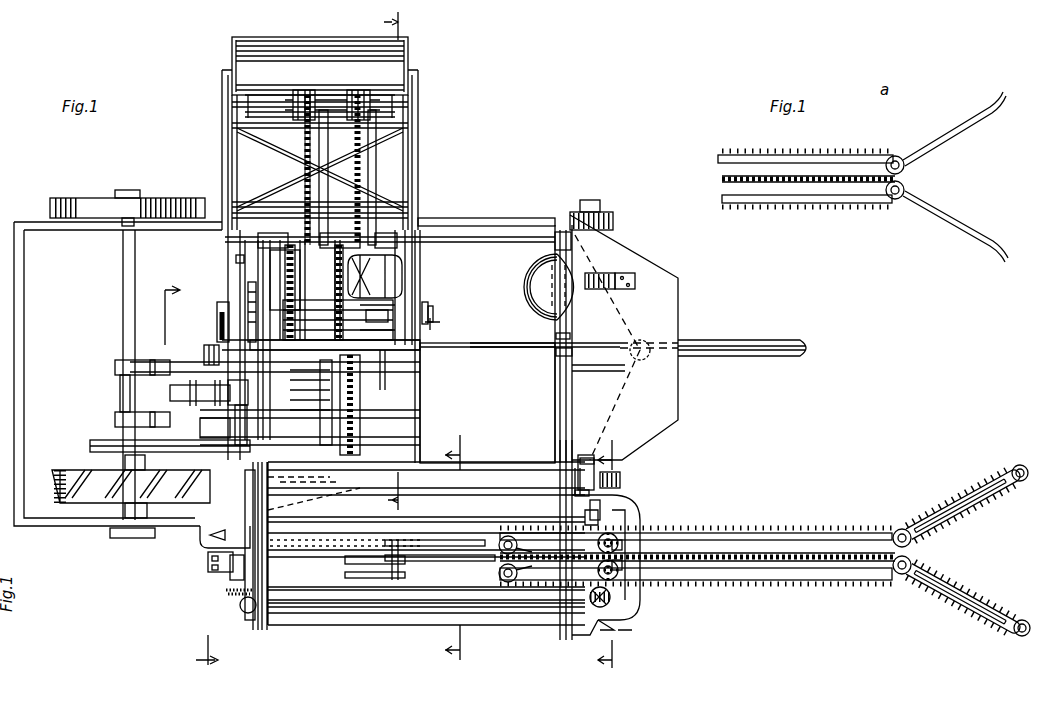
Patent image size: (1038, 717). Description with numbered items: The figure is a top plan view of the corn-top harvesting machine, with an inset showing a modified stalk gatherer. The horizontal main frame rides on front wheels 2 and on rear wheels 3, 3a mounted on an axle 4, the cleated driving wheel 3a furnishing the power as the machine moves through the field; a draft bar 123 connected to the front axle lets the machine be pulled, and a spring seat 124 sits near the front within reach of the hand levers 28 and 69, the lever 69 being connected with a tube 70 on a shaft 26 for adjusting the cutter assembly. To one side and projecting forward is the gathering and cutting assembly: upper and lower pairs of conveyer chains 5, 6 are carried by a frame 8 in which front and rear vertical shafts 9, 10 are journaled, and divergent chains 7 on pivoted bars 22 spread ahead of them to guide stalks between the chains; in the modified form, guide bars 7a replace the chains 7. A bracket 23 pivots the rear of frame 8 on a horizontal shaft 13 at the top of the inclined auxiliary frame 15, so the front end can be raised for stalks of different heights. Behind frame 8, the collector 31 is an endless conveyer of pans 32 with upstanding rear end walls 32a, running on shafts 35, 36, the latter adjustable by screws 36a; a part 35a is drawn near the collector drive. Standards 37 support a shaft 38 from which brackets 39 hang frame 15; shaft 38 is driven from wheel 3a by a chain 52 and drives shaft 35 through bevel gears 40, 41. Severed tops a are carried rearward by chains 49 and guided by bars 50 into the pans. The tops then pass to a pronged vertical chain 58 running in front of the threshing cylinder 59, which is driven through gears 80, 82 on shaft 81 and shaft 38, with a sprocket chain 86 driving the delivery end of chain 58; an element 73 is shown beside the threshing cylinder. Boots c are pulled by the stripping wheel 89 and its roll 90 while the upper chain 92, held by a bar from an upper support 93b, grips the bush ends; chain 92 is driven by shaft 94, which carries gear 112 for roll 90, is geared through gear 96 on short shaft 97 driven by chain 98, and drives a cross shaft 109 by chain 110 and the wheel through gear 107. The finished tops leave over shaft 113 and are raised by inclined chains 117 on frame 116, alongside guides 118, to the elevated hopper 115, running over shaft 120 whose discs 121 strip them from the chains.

In FIG. 1, the front wheel 2 is at (600, 210).
In FIG. 1, the rear wheel 3 is at (72, 198).
In FIG. 1, the cleated driving wheel 3a is at (65, 470).
In FIG. 1, the axle 4 is at (123, 310).
In FIG. 1, the upper conveyer chain 5 is at (753, 530).
In FIG. 1A, the upper conveyer chain 5 is at (822, 150).
In FIG. 1, the lower conveyer chain 6 is at (186, 479).
In FIG. 1, the divergent conveyer chain 7 is at (985, 505).
In FIG. 1A, the guide bar 7a is at (990, 236).
In FIG. 1, the frame 8 is at (613, 552).
In FIG. 1, the front vertical shaft 9 is at (903, 528).
In FIG. 1A, the front vertical shaft 9 is at (900, 156).
In FIG. 1, the rear vertical shaft 10 is at (618, 535).
In FIG. 1, the horizontal shaft 13 is at (612, 600).
In FIG. 1, the auxiliary frame 15 is at (590, 640).
In FIG. 1, the bar 22 is at (965, 492).
In FIG. 1, the bracket 23 is at (630, 505).
In FIG. 1, the shaft 26 is at (572, 334).
In FIG. 1, the hand lever 28 is at (572, 350).
In FIG. 1, the collector 31 is at (398, 630).
In FIG. 1, the pan 32 is at (520, 605).
In FIG. 1, the rear end wall 32a is at (280, 622).
In FIG. 1, the shaft 35 is at (262, 630).
In FIG. 1, the bracket 35a is at (612, 628).
In FIG. 1, the shaft 36 is at (575, 500).
In FIG. 1, the screw 36a is at (584, 458).
In FIG. 1, the upright standard 37 is at (208, 570).
In FIG. 1, the horizontal shaft 38 is at (200, 538).
In FIG. 1, the bracket 39 is at (228, 578).
In FIG. 1, the bevel gear 40 is at (245, 608).
In FIG. 1, the bevel gear 41 is at (232, 594).
In FIG. 1, the chain 49 is at (506, 535).
In FIG. 1, the guide bar 50 is at (460, 560).
In FIG. 1, the chain 52 is at (110, 442).
In FIG. 1, the conveyer chain 58 is at (380, 388).
In FIG. 1, the threshing cylinder 59 is at (345, 403).
In FIG. 1, the lever 69 is at (605, 370).
In FIG. 1, the tube 70 is at (562, 400).
In FIG. 1, the bar 73 is at (335, 416).
In FIG. 1, the bevel gear 80 is at (215, 410).
In FIG. 1, the shaft 81 is at (172, 392).
In FIG. 1, the bevel gear 82 is at (240, 402).
In FIG. 1, the sprocket chain 86 is at (204, 345).
In FIG. 1, the boot stripping wheel 89 is at (405, 275).
In FIG. 1, the roll 90 is at (345, 292).
In FIG. 1, the upper chain 92 is at (296, 278).
In FIG. 1, the upper support 93b is at (236, 258).
In FIG. 1, the shaft 94 is at (440, 324).
In FIG. 1, the spur gear 96 is at (252, 302).
In FIG. 1, the short shaft 97 is at (216, 311).
In FIG. 1, the sprocket chain 98 is at (220, 325).
In FIG. 1, the bevel gear 107 is at (380, 322).
In FIG. 1, the cross shaft 109 is at (434, 310).
In FIG. 1, the sprocket chain 110 is at (430, 304).
In FIG. 1, the bevel gear 112 is at (385, 350).
In FIG. 1, the shaft 113 is at (425, 242).
In FIG. 1, the hopper 115 is at (343, 36).
In FIG. 1, the frame 116 is at (420, 150).
In FIG. 1, the elevating conveyer chain 117 is at (302, 155).
In FIG. 1, the rod 118 is at (368, 192).
In FIG. 1, the shaft 120 is at (280, 84).
In FIG. 1, the disc 121 is at (352, 92).
In FIG. 1, the draft bar 123 is at (770, 357).
In FIG. 1, the spring seat 124 is at (535, 308).
In FIG. 1, the severed top a is at (332, 538).
In FIG. 1, the boot c is at (375, 540).